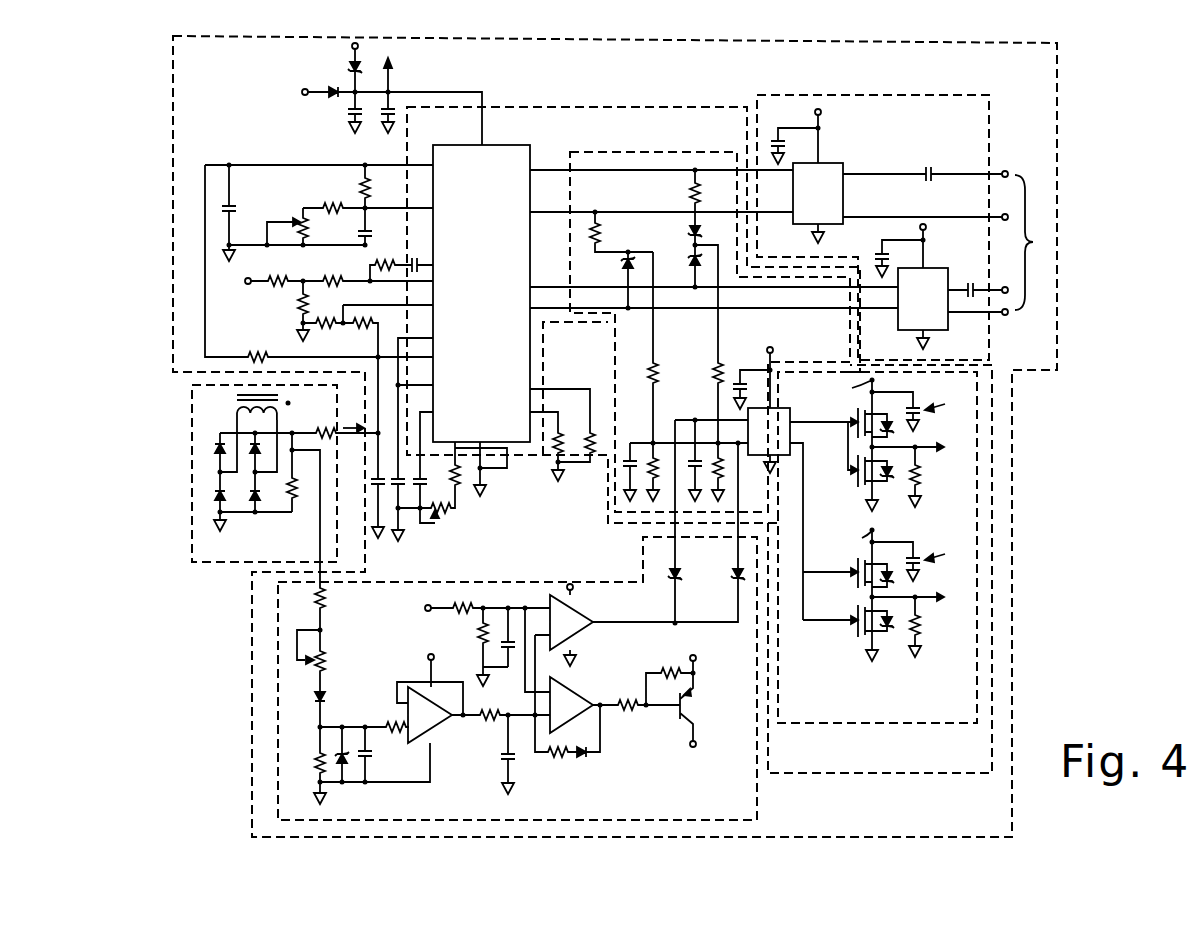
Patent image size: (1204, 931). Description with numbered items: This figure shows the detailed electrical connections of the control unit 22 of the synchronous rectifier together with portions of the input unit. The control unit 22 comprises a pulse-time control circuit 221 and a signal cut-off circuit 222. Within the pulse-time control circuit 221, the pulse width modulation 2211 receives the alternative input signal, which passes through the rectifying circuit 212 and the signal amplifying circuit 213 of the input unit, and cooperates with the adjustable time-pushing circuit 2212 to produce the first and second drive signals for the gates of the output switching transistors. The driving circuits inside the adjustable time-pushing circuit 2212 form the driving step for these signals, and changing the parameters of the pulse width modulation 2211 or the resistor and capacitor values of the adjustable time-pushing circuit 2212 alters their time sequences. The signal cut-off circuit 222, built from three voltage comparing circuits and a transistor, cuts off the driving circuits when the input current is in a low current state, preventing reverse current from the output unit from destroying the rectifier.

The control unit 22 is at (812, 828).
The pulse-time control circuit 221 is at (506, 114).
The pulse width modulation 2211 is at (481, 293).
The signal amplifying circuit 213 is at (888, 99).
The rectifying circuit 212 is at (200, 550).
The adjustable time-pushing circuit 2212 is at (981, 488).
The signal cut-off circuit 222 is at (533, 812).